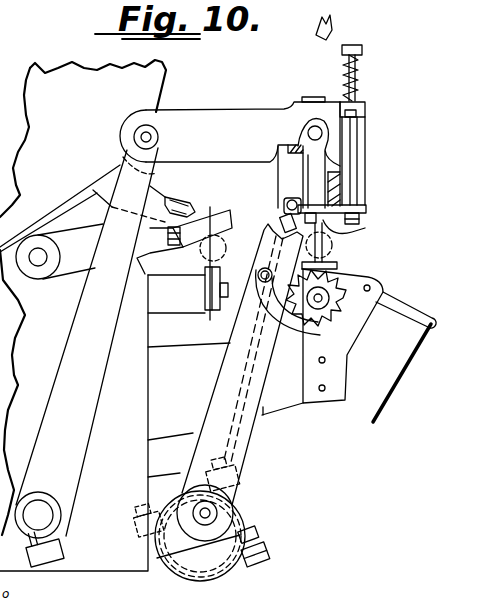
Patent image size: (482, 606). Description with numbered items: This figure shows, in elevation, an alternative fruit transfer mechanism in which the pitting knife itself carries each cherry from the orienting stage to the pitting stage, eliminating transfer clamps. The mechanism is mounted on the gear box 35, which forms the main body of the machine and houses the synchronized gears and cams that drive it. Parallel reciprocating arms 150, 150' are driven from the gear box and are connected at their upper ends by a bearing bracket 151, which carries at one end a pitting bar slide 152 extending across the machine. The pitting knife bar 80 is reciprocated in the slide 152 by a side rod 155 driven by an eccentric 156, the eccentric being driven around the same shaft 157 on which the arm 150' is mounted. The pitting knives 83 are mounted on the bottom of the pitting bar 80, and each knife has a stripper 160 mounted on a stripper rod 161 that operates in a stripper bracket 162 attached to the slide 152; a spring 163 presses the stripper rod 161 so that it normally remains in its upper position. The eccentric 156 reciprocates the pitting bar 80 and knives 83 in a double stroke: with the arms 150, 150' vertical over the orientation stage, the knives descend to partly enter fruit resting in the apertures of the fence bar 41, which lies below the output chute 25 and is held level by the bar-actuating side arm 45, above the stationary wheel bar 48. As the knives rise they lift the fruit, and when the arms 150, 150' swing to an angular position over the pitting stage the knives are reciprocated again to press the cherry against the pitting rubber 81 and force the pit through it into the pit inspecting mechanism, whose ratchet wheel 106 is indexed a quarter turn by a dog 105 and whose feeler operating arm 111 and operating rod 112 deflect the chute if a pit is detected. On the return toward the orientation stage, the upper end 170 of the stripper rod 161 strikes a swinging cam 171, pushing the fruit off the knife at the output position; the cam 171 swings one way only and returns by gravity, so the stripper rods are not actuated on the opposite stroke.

The gear box 35 is at (113, 545).
The bearing bracket 151 is at (240, 108).
The pitting knife bar 80 is at (289, 168).
The pitting bar slide 152 is at (337, 177).
The stripper bracket 162 is at (364, 105).
The stripper rod 161 is at (358, 148).
The spring 163 is at (360, 72).
The upper end of stripper rod 170 is at (356, 45).
The swinging cam 171 is at (318, 34).
The stripper 160 is at (356, 232).
The pitting knife 83 is at (329, 242).
The pitting rubber 81 is at (338, 267).
The operating arm 111 is at (390, 300).
The operating rod 112 is at (397, 392).
The ratchet wheel 106 is at (338, 312).
The dog 105 is at (326, 336).
The reciprocating arm 150' is at (242, 351).
The side rod 155 is at (243, 390).
The shaft 157 is at (210, 512).
The eccentric 156 is at (204, 558).
The reciprocating arm 150 is at (86, 357).
The bar-actuating side arm 45 is at (87, 242).
The output chute 25 is at (177, 196).
The fence bar 41 is at (224, 219).
The wheel bar 48 is at (207, 290).